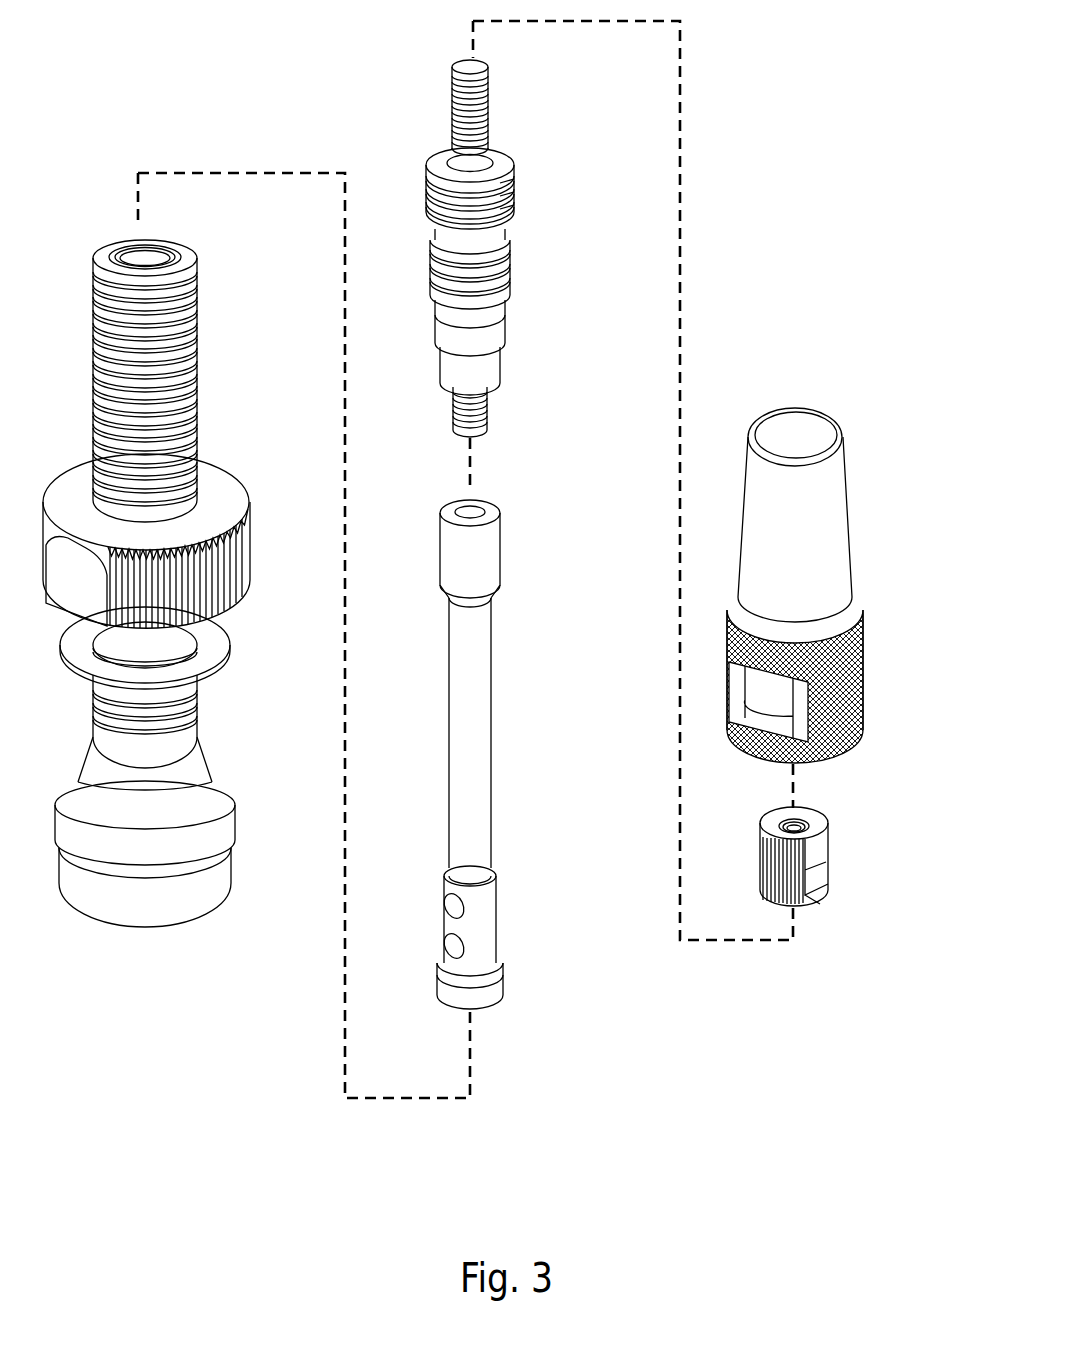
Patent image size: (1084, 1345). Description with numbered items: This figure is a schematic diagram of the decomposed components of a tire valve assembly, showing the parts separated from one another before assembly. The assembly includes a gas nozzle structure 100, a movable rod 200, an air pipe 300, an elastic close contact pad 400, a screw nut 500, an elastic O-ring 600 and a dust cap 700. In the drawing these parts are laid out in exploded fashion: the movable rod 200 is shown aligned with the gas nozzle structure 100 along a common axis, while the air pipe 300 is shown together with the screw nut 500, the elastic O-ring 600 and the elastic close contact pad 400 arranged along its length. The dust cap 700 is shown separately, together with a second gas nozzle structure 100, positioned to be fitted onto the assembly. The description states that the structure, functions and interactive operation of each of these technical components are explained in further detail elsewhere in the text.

The gas nozzle structure 100 is at (506, 280).
The movable rod 200 is at (485, 637).
The air pipe 300 is at (166, 358).
The elastic close contact pad 400 is at (220, 823).
The screw nut 500 is at (228, 578).
The elastic O-ring 600 is at (203, 661).
The dust cap 700 is at (827, 563).